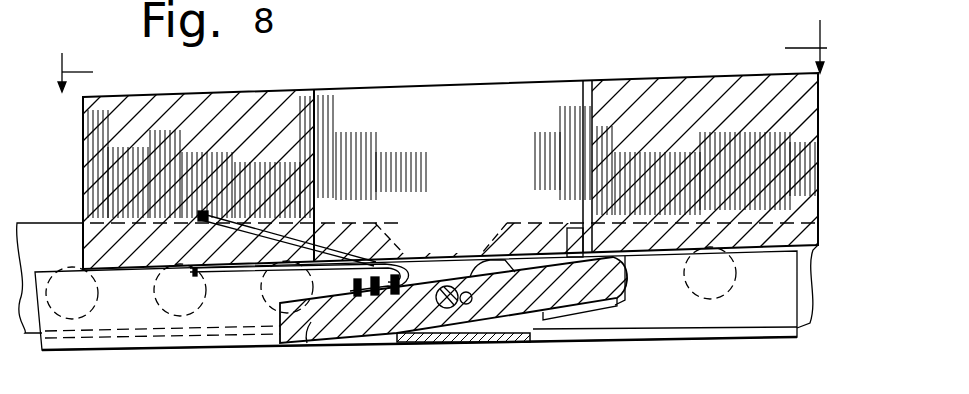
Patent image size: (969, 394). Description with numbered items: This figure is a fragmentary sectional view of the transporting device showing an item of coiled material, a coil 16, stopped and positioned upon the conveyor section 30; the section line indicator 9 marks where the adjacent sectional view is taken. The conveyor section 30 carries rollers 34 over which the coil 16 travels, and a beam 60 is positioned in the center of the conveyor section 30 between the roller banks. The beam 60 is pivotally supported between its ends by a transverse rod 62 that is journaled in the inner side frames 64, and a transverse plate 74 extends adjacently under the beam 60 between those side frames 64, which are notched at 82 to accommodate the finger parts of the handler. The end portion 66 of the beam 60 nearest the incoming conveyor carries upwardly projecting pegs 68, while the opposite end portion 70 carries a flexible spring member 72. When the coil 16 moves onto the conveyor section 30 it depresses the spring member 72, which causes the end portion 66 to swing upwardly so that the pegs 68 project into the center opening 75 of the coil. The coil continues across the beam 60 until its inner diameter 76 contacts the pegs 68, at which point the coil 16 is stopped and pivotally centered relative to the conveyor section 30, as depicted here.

The section line 9- 9 is at (442, 56).
The coil 16 is at (641, 76).
The center opening 75 is at (432, 93).
The inner diameter 76 is at (578, 105).
The notch 82 is at (447, 263).
The pegs 68 is at (567, 234).
The rollers 34 is at (72, 270).
The conveyor section 30 is at (35, 351).
The inner side frames 64 is at (648, 322).
The beam 60 is at (342, 342).
The end portion 70 is at (311, 342).
The end portion 66 is at (625, 294).
The transverse rod 62 is at (447, 308).
The transverse plate 74 is at (477, 342).
The spring member 72 is at (242, 268).